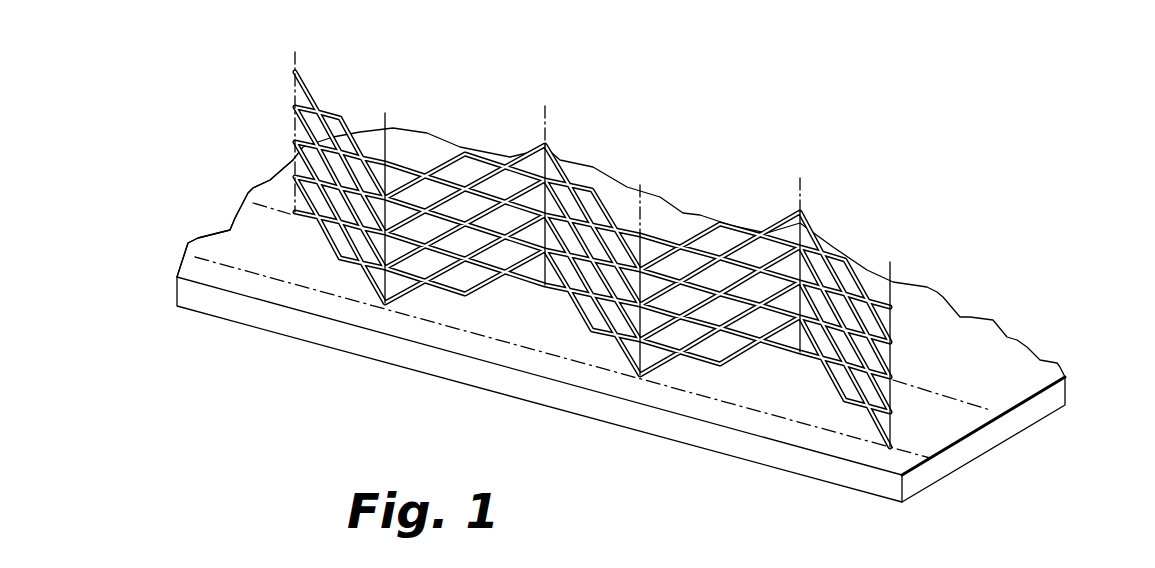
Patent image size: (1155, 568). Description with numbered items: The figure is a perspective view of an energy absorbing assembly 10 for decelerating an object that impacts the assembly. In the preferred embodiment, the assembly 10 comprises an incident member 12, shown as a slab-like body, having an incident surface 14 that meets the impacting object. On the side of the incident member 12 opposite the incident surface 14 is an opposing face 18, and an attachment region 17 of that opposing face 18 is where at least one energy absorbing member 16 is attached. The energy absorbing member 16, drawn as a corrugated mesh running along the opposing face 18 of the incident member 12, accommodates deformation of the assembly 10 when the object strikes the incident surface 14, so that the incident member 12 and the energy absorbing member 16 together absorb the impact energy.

The energy absorbing assembly 10 is at (950, 198).
The incident member 12 is at (990, 449).
The incident surface 14 is at (838, 485).
The energy absorbing member 16 is at (728, 224).
The attachment region 17 is at (253, 237).
The opposing face 18 is at (965, 338).